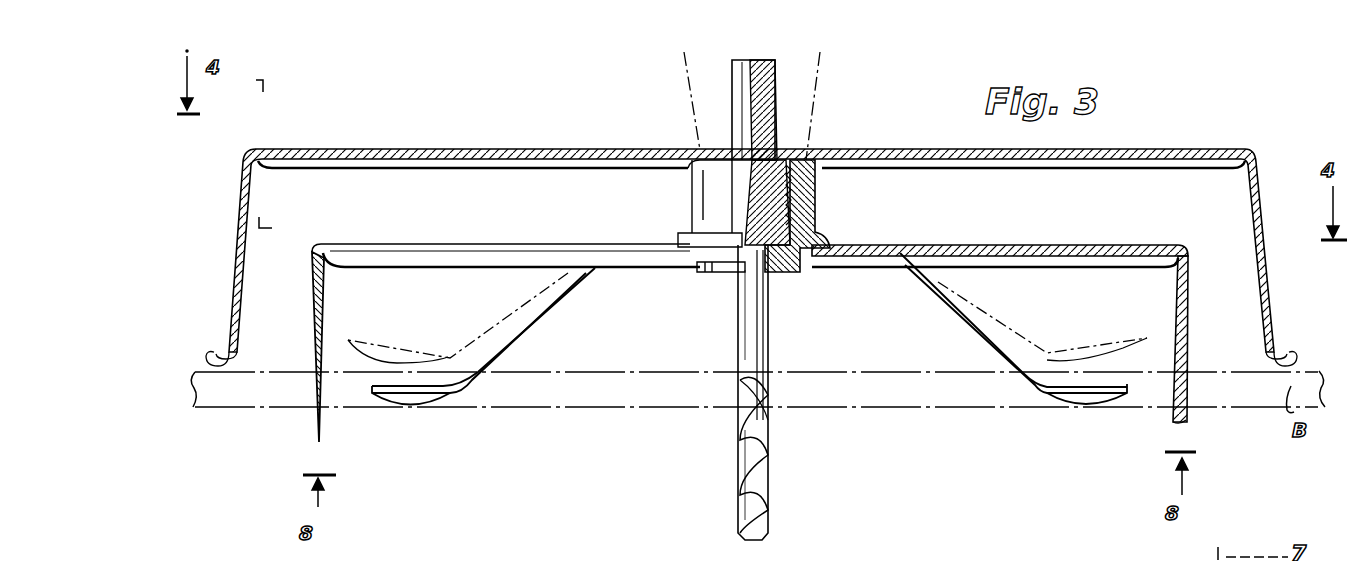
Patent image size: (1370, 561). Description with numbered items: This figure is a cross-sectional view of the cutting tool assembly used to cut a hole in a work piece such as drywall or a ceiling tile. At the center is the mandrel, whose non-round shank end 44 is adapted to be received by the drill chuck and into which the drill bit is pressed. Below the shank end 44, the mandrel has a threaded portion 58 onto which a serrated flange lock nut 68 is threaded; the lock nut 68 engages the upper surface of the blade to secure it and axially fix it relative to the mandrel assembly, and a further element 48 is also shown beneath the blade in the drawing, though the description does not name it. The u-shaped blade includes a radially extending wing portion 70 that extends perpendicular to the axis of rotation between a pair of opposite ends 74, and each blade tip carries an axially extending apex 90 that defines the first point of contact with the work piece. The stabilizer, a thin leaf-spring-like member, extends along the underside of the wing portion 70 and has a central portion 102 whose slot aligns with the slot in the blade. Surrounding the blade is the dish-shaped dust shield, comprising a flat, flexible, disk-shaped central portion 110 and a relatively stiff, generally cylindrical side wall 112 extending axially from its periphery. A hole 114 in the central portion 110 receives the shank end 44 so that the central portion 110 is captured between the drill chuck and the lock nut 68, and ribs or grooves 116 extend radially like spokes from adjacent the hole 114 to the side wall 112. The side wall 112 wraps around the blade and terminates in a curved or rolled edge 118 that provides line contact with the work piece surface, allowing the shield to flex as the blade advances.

The shank end 44 is at (770, 75).
The threaded portion 58 is at (775, 165).
The serrated flange lock nut 68 is at (800, 196).
The washer 48 is at (720, 272).
The central portion 102 is at (880, 256).
The central portion 110 is at (505, 150).
The hole 114 is at (735, 130).
The ribs/grooves 116 is at (583, 170).
The side wall 112 is at (236, 247).
The edge 118 is at (1285, 352).
The wing portion 70 is at (467, 226).
The opposite ends 74 is at (344, 243).
The apex 90 is at (1178, 425).